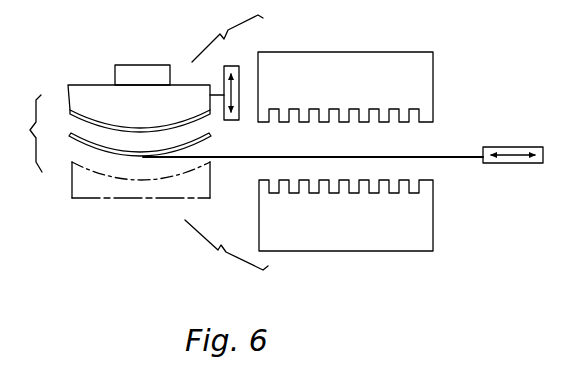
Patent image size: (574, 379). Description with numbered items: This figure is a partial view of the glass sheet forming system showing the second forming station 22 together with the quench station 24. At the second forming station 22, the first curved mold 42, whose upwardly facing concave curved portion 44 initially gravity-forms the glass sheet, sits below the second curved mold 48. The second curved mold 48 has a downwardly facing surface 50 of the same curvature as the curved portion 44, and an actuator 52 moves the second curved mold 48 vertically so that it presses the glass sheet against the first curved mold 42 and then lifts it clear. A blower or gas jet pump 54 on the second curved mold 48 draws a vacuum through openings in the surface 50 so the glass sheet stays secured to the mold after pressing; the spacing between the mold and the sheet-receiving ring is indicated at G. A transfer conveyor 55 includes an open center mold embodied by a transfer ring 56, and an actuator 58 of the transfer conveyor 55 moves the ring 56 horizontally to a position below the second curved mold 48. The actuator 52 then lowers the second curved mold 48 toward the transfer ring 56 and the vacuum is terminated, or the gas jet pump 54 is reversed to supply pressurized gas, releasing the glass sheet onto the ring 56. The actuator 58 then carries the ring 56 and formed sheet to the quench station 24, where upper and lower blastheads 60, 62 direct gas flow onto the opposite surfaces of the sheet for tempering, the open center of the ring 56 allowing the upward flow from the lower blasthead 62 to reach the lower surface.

The second forming station 22 is at (139, 214).
The quench station 24 is at (377, 171).
The first curved mold 42 is at (97, 199).
The curved portion 44 is at (157, 181).
The second curved mold 48 is at (66, 86).
The downwardly facing surface 50 is at (104, 124).
The actuator 52 is at (242, 73).
The gas jet pump 54 is at (131, 65).
The transfer conveyor 55 is at (448, 151).
The transfer ring 56 is at (66, 147).
The actuator 58 is at (513, 146).
The upper blasthead 60 is at (427, 64).
The lower blasthead 62 is at (430, 218).
The gap G is at (140, 127).